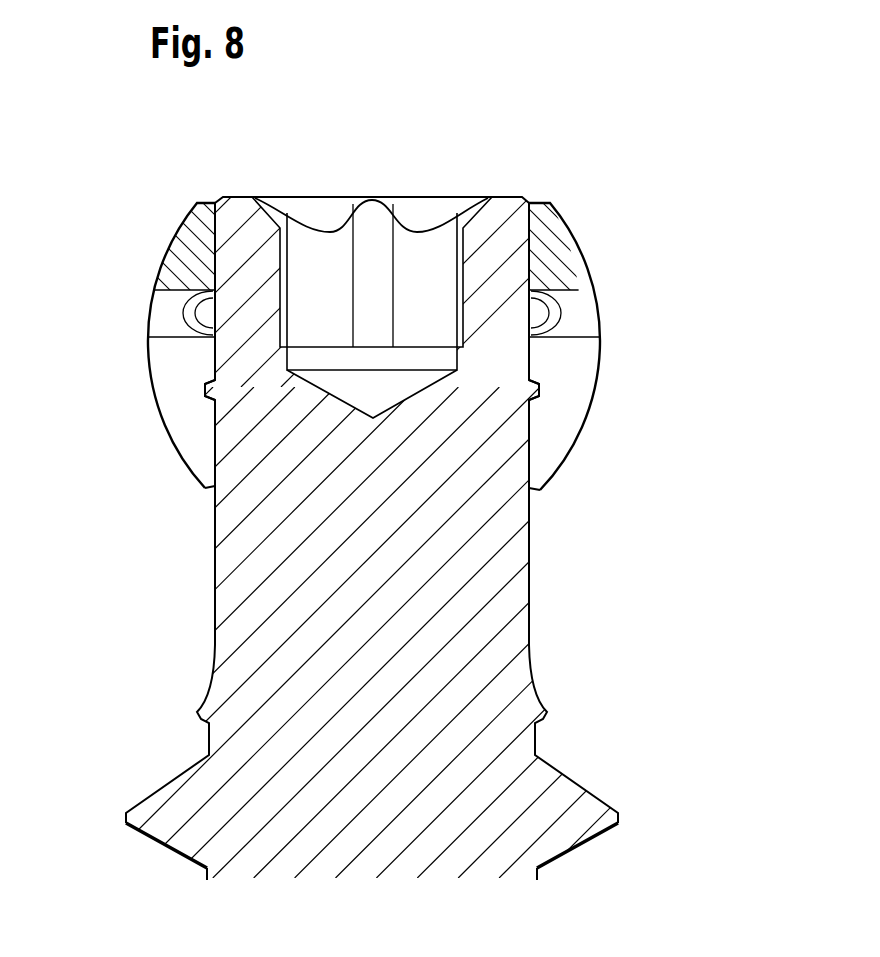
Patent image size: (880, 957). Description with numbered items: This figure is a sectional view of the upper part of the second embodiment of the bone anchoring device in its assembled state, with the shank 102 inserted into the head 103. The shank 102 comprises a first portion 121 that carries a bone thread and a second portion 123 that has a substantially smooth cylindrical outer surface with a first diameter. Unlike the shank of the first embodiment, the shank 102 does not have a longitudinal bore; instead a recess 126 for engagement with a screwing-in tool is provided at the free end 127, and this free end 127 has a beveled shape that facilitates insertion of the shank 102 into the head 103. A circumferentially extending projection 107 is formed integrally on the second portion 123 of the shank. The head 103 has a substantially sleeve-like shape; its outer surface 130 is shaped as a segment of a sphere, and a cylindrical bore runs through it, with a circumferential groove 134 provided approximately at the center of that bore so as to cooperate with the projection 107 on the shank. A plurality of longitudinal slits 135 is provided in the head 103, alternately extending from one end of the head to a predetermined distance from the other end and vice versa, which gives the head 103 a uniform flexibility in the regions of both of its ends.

The shank 102 is at (567, 748).
The head 103 is at (577, 235).
The projection 107 is at (205, 388).
The first portion 121 is at (153, 803).
The second portion 123 is at (278, 505).
The recess 126 is at (325, 233).
The free end 127 is at (503, 207).
The outer surface 130 is at (597, 372).
The circumferential groove 134 is at (546, 387).
The longitudinal slits 135 is at (553, 440).